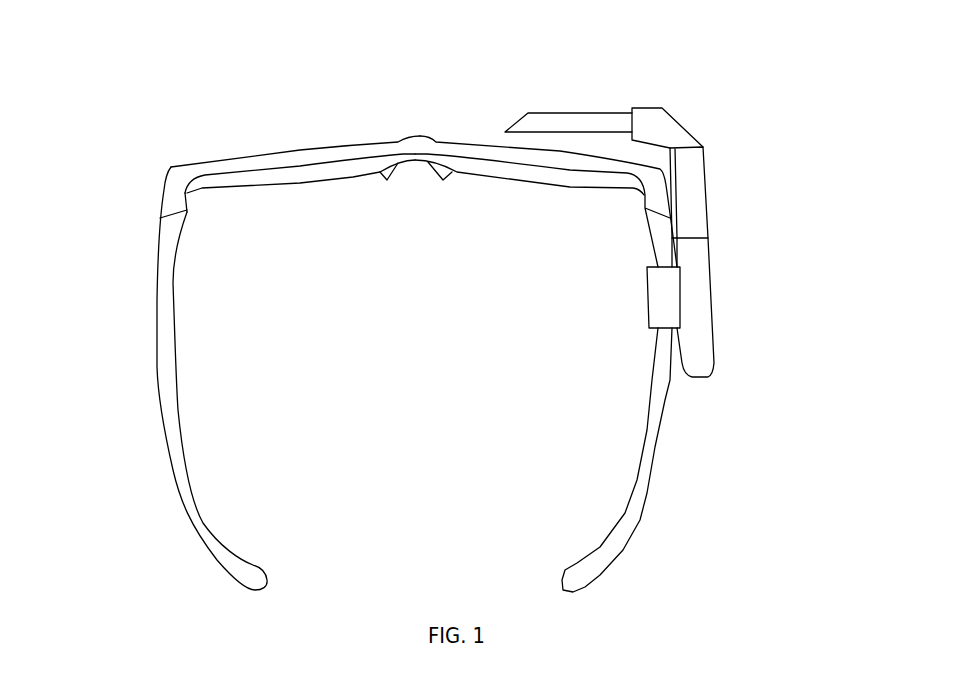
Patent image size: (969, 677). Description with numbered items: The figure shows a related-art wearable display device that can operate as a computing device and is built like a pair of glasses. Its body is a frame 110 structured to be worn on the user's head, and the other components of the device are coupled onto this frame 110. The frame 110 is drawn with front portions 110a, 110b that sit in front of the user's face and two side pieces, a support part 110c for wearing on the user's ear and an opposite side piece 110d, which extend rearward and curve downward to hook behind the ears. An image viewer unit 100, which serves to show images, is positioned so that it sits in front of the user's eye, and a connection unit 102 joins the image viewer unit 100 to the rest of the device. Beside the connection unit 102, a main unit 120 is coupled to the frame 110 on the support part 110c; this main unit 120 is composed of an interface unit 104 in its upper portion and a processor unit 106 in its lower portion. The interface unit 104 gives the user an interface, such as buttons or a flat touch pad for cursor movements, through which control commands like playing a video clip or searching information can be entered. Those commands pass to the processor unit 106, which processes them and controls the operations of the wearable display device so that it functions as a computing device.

The image viewer unit 100 is at (577, 113).
The connection unit 102 is at (690, 132).
The interface unit 104 is at (703, 195).
The processor unit 106 is at (707, 265).
The main unit 120 is at (827, 195).
The frame 110 is at (723, 410).
The right front frame portion 110a is at (538, 185).
The left front frame portion 110b is at (302, 183).
The support part 110c is at (643, 487).
The left temple 110d is at (172, 398).